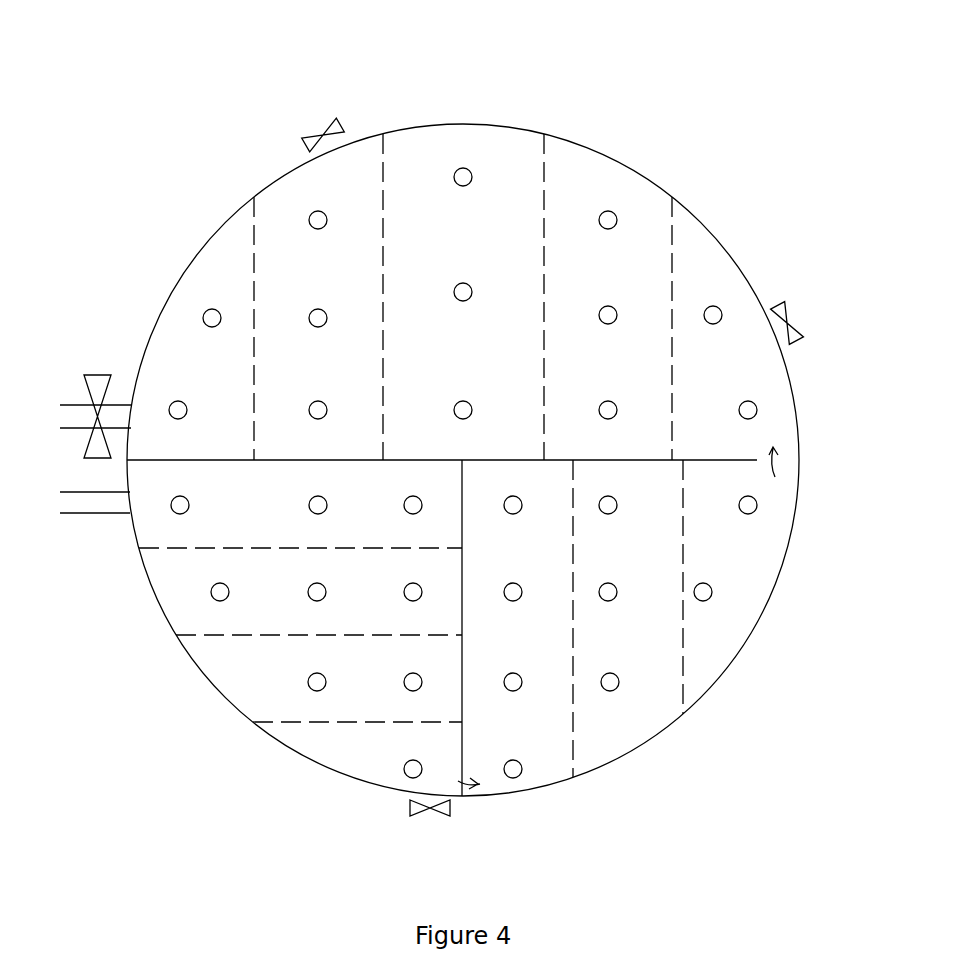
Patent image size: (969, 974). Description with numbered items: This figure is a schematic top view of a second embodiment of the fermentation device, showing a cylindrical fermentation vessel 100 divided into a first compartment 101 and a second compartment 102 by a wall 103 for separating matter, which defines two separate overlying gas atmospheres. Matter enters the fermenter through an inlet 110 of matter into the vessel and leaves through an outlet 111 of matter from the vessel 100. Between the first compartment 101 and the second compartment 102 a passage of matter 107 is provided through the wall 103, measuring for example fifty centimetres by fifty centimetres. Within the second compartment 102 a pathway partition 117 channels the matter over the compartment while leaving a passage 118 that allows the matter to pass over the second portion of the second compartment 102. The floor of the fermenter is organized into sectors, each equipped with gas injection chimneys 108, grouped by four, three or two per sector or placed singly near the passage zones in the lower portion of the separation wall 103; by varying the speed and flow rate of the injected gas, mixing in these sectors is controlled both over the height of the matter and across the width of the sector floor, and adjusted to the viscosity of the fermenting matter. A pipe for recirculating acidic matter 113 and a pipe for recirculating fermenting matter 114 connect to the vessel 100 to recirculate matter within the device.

The fermentation vessel 100 is at (472, 118).
The first compartment 101 is at (238, 612).
The second compartment 102 is at (580, 186).
The wall for separating matter 103 is at (458, 712).
The passage of matter 107 is at (478, 785).
The gas injection chimneys 108 is at (308, 683).
The inlet of matter 110 is at (100, 522).
The outlet of matter 111 is at (115, 410).
The pipe for recirculating acidic matter 113 is at (430, 812).
The pipe for recirculating fermenting matter 114 is at (325, 128).
The pathway partition 117 is at (578, 460).
The passage of matter 118 is at (789, 472).